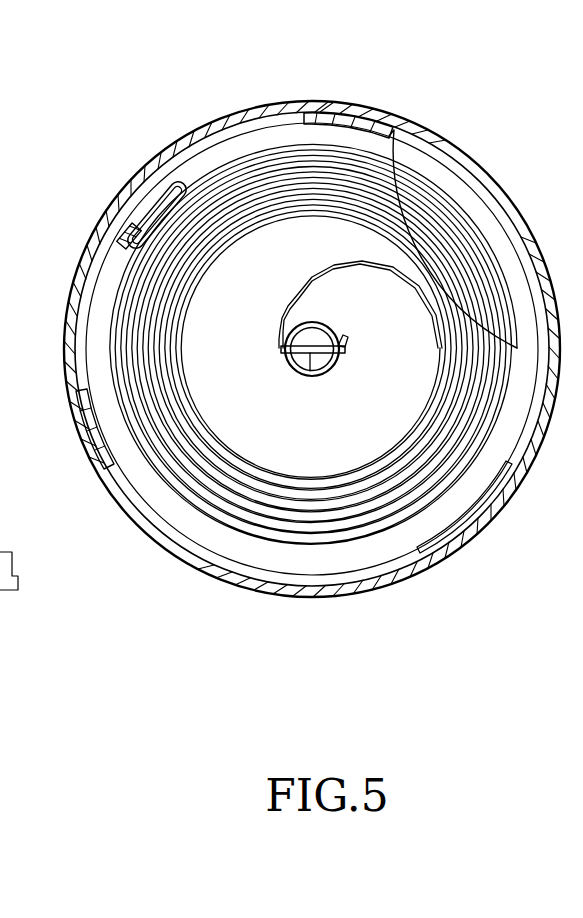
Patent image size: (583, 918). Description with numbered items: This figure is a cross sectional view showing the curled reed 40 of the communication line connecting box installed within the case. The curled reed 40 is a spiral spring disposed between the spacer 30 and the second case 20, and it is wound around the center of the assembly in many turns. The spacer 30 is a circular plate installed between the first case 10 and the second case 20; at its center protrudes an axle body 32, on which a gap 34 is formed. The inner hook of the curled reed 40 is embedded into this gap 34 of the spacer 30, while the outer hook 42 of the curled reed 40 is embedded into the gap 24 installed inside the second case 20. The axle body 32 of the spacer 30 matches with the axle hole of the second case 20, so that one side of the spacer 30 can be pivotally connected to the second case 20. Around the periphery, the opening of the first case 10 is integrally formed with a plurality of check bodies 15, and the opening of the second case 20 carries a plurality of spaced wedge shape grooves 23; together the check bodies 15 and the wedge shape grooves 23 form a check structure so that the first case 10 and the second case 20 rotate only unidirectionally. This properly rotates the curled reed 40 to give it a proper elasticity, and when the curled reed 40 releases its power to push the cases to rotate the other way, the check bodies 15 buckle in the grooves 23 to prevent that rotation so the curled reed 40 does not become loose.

The first case 10 is at (503, 193).
The check bodies 15 is at (387, 122).
The second case 20 is at (312, 106).
The wedge shape grooves 23 is at (363, 112).
The gap 24 is at (122, 237).
The spacer 30 is at (272, 330).
The axle body 32 is at (337, 370).
The gap 34 is at (343, 341).
The curled reed 40 is at (425, 212).
The outer hook 42 is at (145, 200).